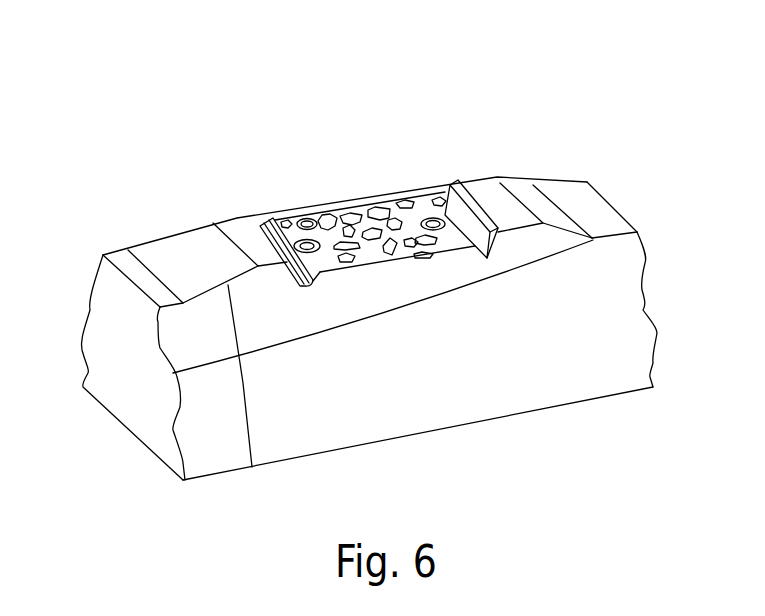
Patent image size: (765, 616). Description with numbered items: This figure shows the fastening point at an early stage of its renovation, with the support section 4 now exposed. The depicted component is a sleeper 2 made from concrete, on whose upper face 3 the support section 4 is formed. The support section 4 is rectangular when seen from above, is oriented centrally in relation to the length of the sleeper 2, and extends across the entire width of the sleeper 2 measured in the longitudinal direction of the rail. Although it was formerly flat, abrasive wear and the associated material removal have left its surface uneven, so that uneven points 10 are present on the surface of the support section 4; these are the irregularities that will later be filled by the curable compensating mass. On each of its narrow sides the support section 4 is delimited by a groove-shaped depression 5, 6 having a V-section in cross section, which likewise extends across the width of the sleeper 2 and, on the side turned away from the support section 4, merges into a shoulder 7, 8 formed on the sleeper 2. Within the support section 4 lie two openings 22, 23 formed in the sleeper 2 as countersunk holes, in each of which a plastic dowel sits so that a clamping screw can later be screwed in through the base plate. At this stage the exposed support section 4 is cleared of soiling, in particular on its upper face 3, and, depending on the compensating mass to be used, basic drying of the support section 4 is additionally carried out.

The sleeper 2 is at (550, 355).
The upper face 3 is at (406, 243).
The support section 4 is at (397, 265).
The groove-shaped depression 5 is at (258, 227).
The groove-shaped depression 6 is at (463, 218).
The shoulder 7 is at (537, 200).
The shoulder 8 is at (197, 251).
The uneven points 10 is at (388, 208).
The opening 22 is at (292, 242).
The opening 23 is at (430, 217).